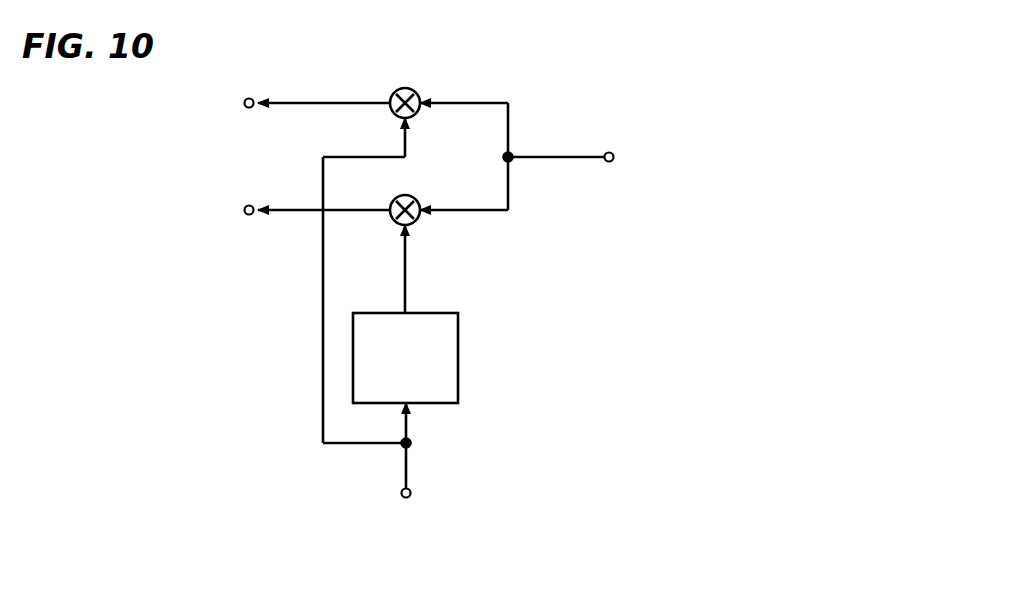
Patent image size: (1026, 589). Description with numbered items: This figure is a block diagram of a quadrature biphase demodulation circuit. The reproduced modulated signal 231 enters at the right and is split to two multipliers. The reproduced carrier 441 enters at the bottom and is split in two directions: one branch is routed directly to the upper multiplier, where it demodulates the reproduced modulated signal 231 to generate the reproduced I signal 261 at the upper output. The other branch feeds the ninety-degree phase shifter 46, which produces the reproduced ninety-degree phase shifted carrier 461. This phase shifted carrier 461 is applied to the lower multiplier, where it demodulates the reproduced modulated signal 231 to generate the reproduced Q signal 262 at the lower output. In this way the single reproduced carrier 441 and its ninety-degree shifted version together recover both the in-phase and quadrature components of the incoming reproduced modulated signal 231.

The reproduced I signal 261 is at (311, 102).
The reproduced Q signal 262 is at (311, 209).
The reproduced modulated signal 231 is at (550, 156).
The reproduced carrier 441 is at (409, 461).
The 90° phase shifter 46 is at (433, 311).
The reproduced 90° phase shifted carrier 461 is at (407, 265).